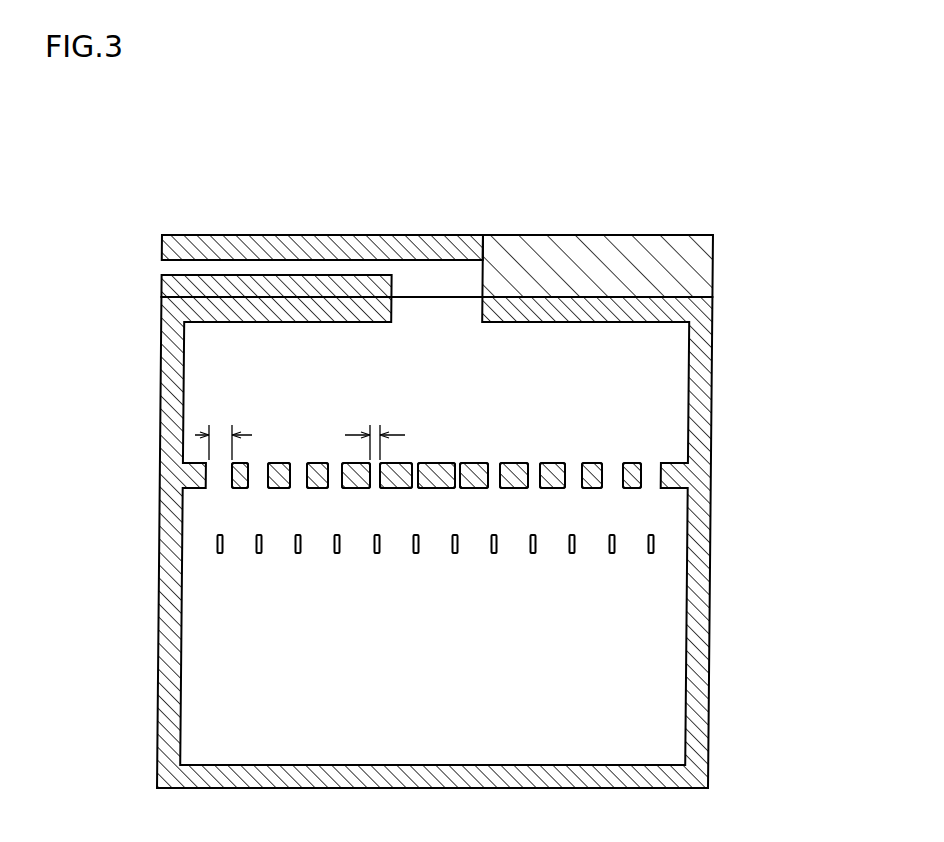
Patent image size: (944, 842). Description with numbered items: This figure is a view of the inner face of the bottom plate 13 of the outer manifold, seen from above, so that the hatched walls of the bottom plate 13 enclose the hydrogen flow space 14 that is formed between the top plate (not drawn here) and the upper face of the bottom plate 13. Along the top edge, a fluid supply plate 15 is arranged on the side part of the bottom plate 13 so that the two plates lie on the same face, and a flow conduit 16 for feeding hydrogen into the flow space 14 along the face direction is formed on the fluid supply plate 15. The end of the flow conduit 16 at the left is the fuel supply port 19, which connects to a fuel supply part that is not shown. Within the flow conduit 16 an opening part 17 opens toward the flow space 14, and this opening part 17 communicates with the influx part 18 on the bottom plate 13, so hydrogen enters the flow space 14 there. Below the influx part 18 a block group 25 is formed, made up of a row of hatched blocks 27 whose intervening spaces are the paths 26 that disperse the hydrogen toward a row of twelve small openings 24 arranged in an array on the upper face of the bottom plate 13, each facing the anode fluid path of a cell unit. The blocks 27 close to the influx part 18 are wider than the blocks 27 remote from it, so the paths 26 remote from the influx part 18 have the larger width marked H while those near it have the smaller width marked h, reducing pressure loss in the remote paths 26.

The bottom plate 13 is at (712, 636).
The hydrogen flow space 14 is at (667, 421).
The fluid supply plate 15 is at (657, 245).
The flow conduit 16 is at (256, 263).
The opening part 17 is at (480, 278).
The influx part 18 is at (395, 313).
The fuel supply port 19 is at (160, 268).
The small openings 24 is at (298, 553).
The block group 25 is at (493, 445).
The paths 26 is at (224, 480).
The blocks 27 is at (313, 489).